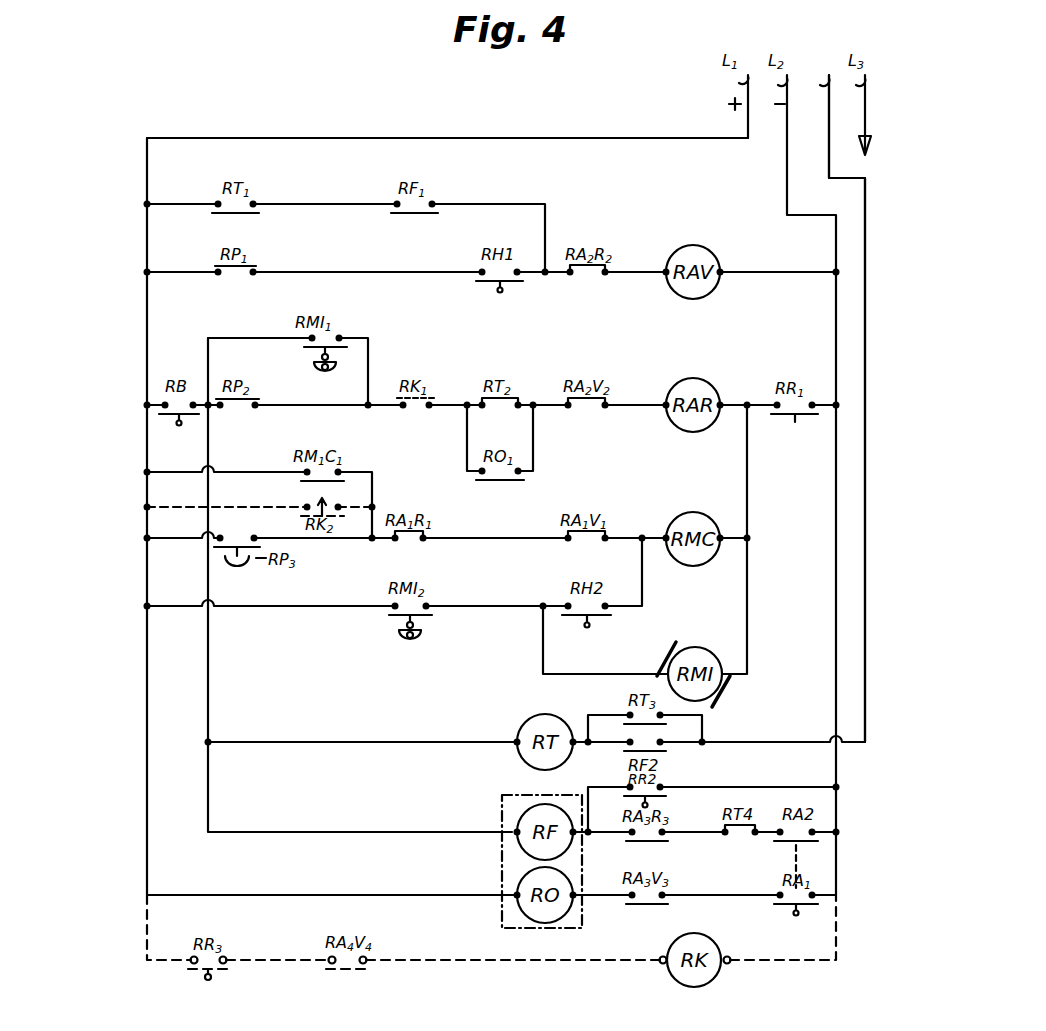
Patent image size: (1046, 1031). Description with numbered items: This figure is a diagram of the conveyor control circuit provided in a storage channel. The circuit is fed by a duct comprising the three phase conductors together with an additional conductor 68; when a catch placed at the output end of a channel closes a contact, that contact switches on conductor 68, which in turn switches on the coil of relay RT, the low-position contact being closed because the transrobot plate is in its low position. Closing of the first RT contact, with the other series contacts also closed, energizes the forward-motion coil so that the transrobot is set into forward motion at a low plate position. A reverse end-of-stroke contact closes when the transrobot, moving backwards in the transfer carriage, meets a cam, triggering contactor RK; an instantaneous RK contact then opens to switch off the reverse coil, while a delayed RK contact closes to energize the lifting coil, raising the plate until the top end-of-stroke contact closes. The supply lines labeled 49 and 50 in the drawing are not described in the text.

The supply conductor 49 is at (447, 137).
The supply conductor 50 is at (836, 472).
The additional conductor 68 is at (835, 394).